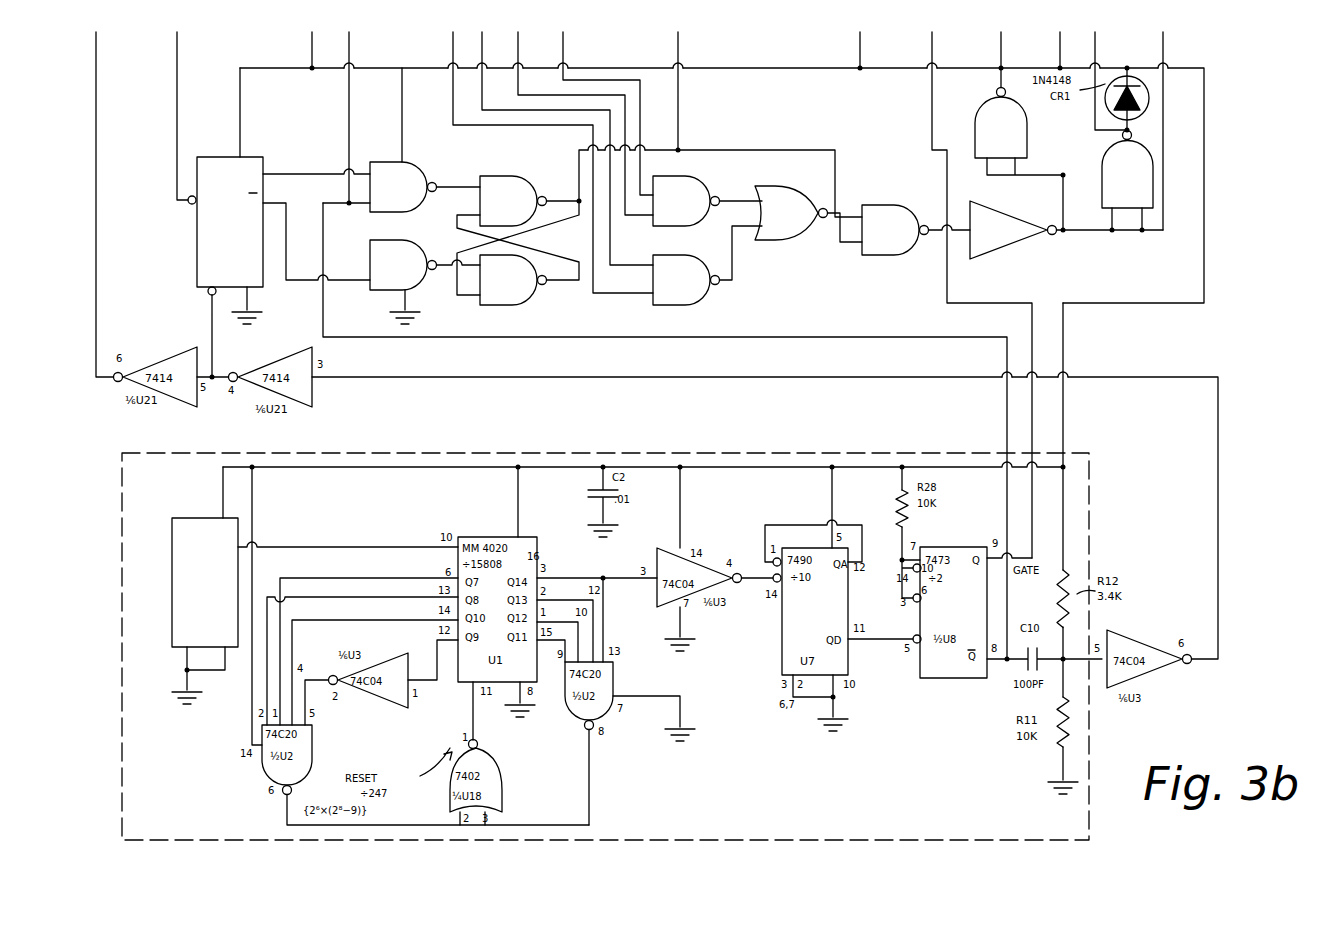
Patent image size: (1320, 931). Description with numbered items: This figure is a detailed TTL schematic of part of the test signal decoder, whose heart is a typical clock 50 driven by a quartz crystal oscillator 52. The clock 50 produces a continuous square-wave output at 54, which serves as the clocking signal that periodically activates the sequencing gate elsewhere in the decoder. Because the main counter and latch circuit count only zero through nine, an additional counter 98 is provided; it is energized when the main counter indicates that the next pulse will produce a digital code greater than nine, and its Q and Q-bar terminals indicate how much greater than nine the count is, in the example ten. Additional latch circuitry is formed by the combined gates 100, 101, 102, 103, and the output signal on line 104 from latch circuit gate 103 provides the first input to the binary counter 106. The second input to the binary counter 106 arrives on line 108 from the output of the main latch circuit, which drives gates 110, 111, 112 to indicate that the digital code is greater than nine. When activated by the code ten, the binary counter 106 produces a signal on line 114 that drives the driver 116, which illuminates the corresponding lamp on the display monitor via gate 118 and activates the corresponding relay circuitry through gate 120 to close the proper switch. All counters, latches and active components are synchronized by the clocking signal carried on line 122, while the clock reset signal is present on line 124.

The clock 50 is at (700, 843).
The quartz crystal oscillator 52 is at (177, 517).
The clock output 54 is at (1009, 305).
The additional counter 98 is at (197, 225).
The latch circuit gate 100 is at (437, 150).
The latch circuit gate 101 is at (382, 290).
The latch circuit gate 102 is at (508, 306).
The latch circuit gate 103 is at (502, 174).
The output signal line 104 is at (564, 199).
The binary counter 106 is at (892, 258).
The second input line 108 is at (846, 205).
The gate 110 is at (689, 178).
The gate 111 is at (690, 240).
The gate 112 is at (789, 186).
The signal line 114 is at (956, 232).
The driver 116 is at (1000, 247).
The gate 118 is at (975, 124).
The gate 120 is at (1100, 172).
The clocking signal line 122 is at (402, 119).
The clock reset line 124 is at (1180, 376).